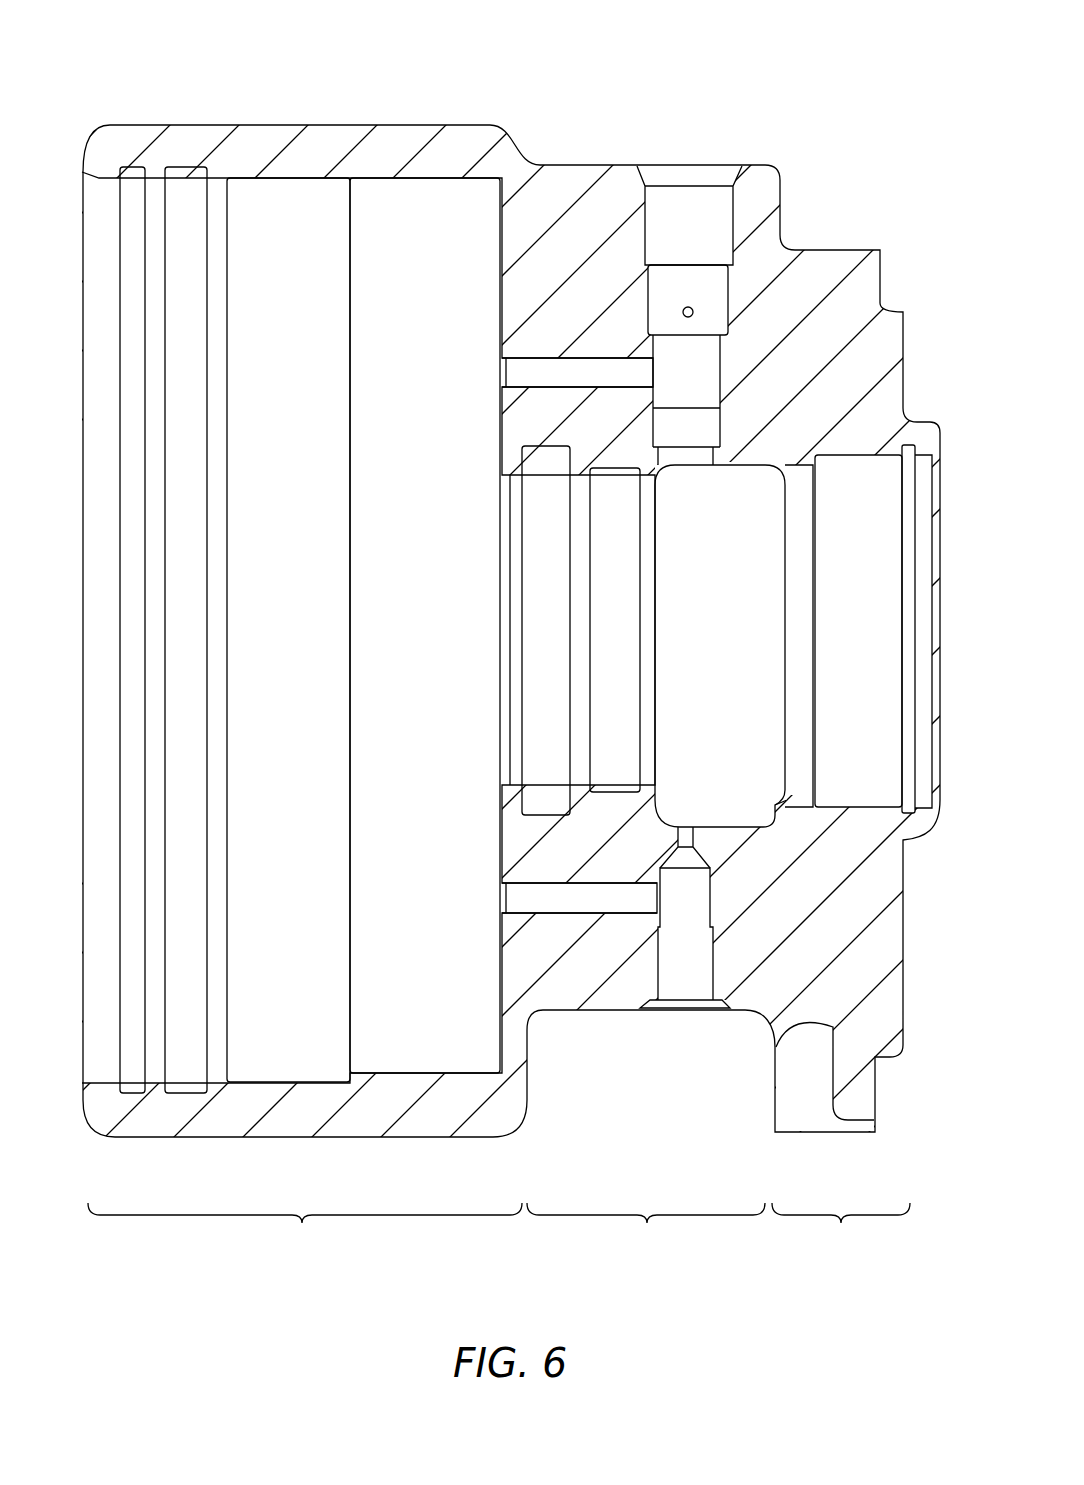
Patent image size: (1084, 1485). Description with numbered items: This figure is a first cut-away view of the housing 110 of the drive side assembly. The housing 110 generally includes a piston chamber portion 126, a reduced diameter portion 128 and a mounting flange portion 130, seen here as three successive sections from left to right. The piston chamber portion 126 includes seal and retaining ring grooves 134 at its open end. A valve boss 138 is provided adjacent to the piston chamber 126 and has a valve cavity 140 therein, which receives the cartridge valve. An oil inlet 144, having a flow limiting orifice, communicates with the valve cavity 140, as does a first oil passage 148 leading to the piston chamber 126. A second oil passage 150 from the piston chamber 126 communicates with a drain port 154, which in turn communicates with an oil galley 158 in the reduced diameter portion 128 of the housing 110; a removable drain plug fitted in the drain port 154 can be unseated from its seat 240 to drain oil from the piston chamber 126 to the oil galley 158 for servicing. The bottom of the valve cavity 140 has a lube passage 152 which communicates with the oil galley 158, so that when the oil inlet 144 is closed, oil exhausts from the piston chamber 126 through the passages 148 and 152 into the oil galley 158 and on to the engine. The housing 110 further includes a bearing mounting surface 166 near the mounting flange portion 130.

The housing 110 is at (542, 575).
The piston chamber portion 126 is at (305, 1233).
The reduced diameter portion 128 is at (646, 1233).
The mounting flange portion 130 is at (841, 1233).
The seal and retaining ring grooves 134 is at (246, 1062).
The valve boss 138 is at (765, 188).
The valve cavity 140 is at (689, 310).
The oil inlet 144 is at (692, 305).
The first oil passage 148 is at (541, 370).
The second oil passage 150 is at (545, 897).
The lube passage 152 is at (688, 456).
The drain port 154 is at (684, 970).
The oil galley 158 is at (752, 590).
The bearing mounting surface 166 is at (861, 468).
The seat 240 is at (696, 858).